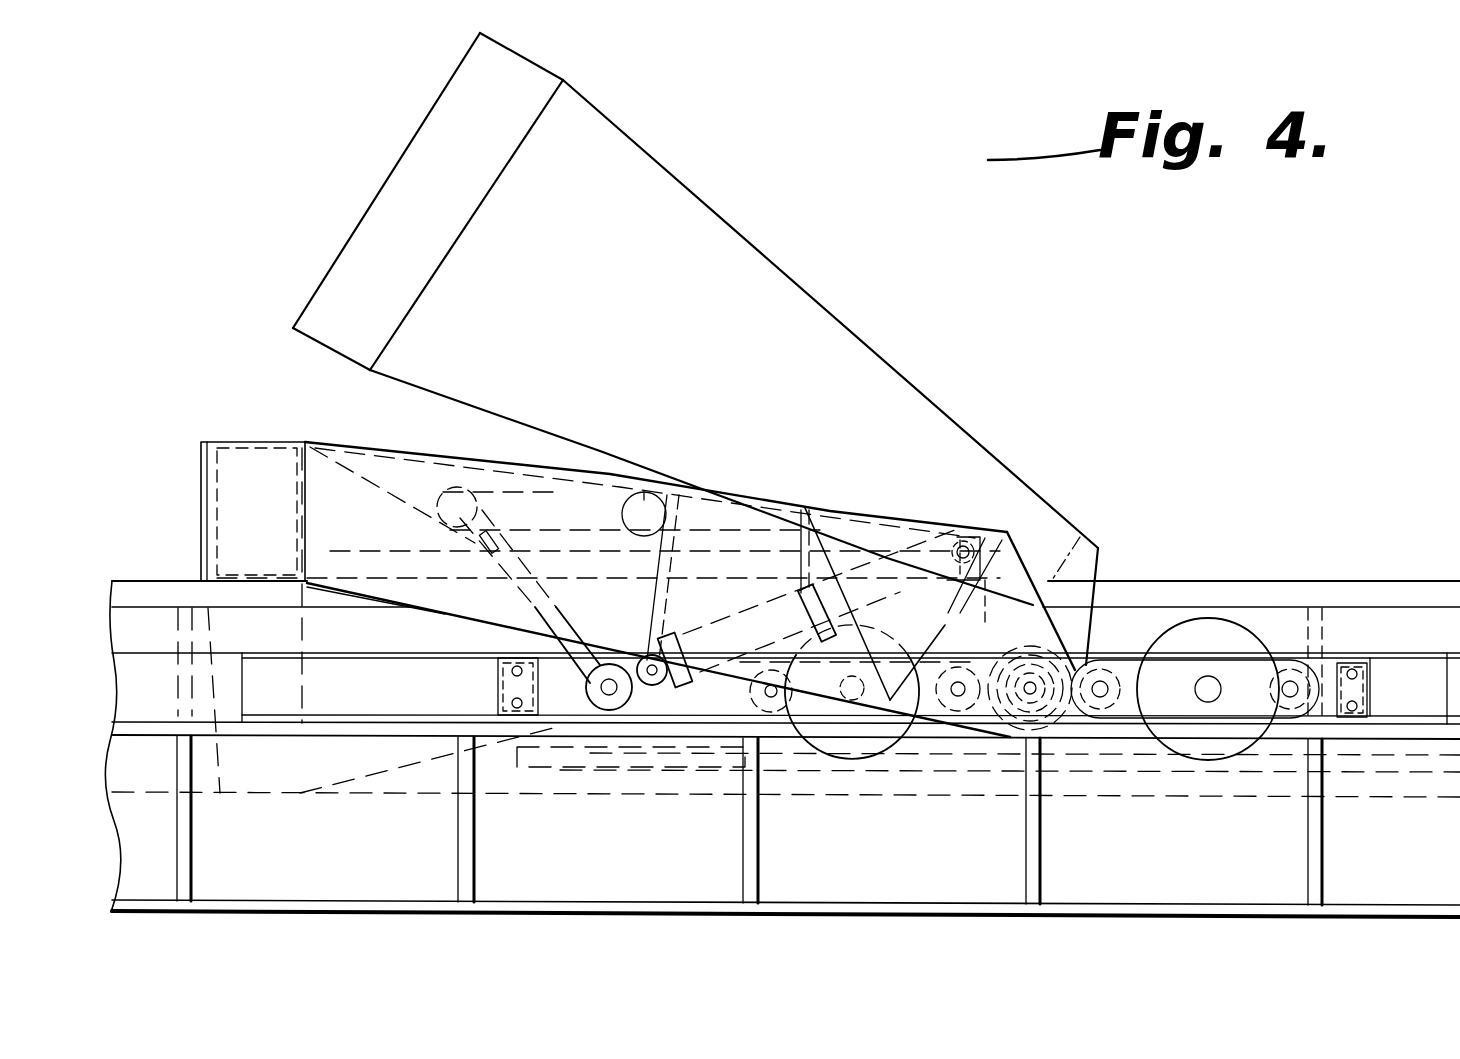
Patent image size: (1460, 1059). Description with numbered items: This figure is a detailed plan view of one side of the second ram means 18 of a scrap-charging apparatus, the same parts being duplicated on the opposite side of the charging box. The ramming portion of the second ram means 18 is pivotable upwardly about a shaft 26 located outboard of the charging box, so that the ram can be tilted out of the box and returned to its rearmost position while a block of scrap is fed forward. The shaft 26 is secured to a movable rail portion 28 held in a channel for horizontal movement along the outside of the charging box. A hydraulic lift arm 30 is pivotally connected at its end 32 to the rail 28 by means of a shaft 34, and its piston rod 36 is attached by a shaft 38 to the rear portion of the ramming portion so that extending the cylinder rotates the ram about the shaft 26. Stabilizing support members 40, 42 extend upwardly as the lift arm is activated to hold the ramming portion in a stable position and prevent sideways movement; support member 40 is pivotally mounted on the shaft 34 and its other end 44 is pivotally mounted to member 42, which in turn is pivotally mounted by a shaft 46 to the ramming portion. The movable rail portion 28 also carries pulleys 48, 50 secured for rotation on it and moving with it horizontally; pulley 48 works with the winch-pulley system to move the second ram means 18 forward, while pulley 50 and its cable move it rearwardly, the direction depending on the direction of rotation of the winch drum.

The second ram means 18 is at (243, 442).
The shaft 26 is at (1058, 653).
The movable rail portion 28 is at (1407, 670).
The hydraulic lift arm 30 is at (681, 634).
The end 32 is at (660, 687).
The shaft 34 is at (607, 665).
The piston rod 36 is at (876, 593).
The shaft 38 is at (970, 531).
The stabilizing support member 40 is at (470, 568).
The stabilizing support member 42 is at (497, 500).
The end 44 is at (437, 490).
The shaft 46 is at (652, 478).
The pulley 48 is at (853, 760).
The pulley 50 is at (1260, 650).